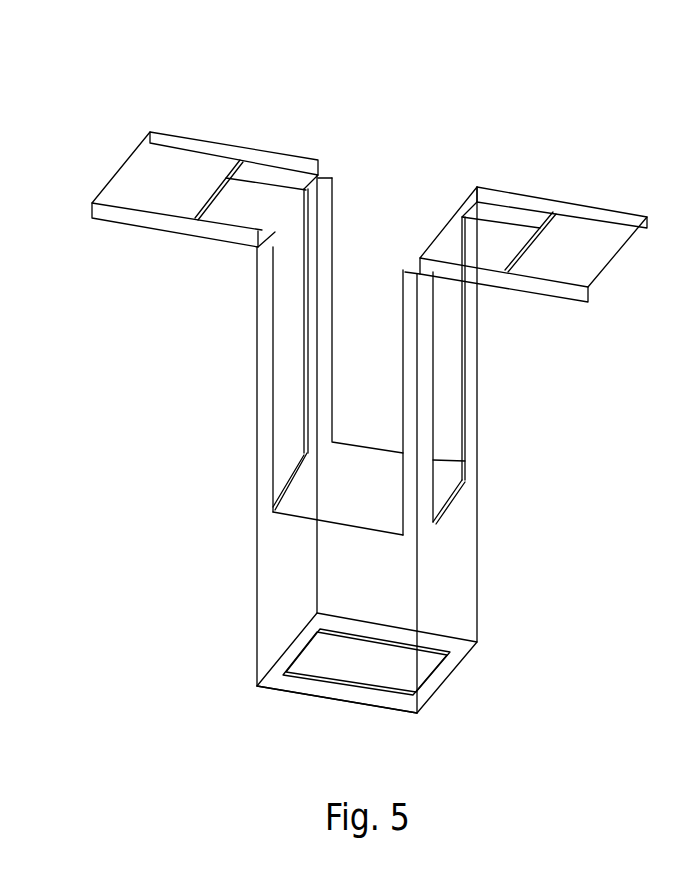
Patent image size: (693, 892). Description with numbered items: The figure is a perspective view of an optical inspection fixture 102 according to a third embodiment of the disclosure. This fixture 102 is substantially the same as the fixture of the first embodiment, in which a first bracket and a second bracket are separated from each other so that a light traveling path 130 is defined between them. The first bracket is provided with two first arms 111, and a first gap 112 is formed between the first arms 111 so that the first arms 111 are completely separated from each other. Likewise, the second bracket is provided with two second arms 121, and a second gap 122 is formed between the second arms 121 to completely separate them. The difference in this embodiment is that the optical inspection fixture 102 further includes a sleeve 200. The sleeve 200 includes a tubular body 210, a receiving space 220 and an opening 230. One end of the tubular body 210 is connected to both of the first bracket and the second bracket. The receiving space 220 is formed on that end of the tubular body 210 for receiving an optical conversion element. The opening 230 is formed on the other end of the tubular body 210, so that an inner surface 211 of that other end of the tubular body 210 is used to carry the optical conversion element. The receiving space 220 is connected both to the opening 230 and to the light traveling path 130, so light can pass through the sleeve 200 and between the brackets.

The optical inspection fixture 102 is at (72, 66).
The light traveling path 130 is at (400, 188).
The first arms 111 is at (262, 244).
The first gap 112 is at (288, 361).
The second arms 121 is at (428, 343).
The second gap 122 is at (445, 459).
The sleeve 200 is at (147, 528).
The tubular body 210 is at (278, 600).
The receiving space 220 is at (307, 505).
The opening 230 is at (327, 666).
The inner surface 211 is at (353, 692).